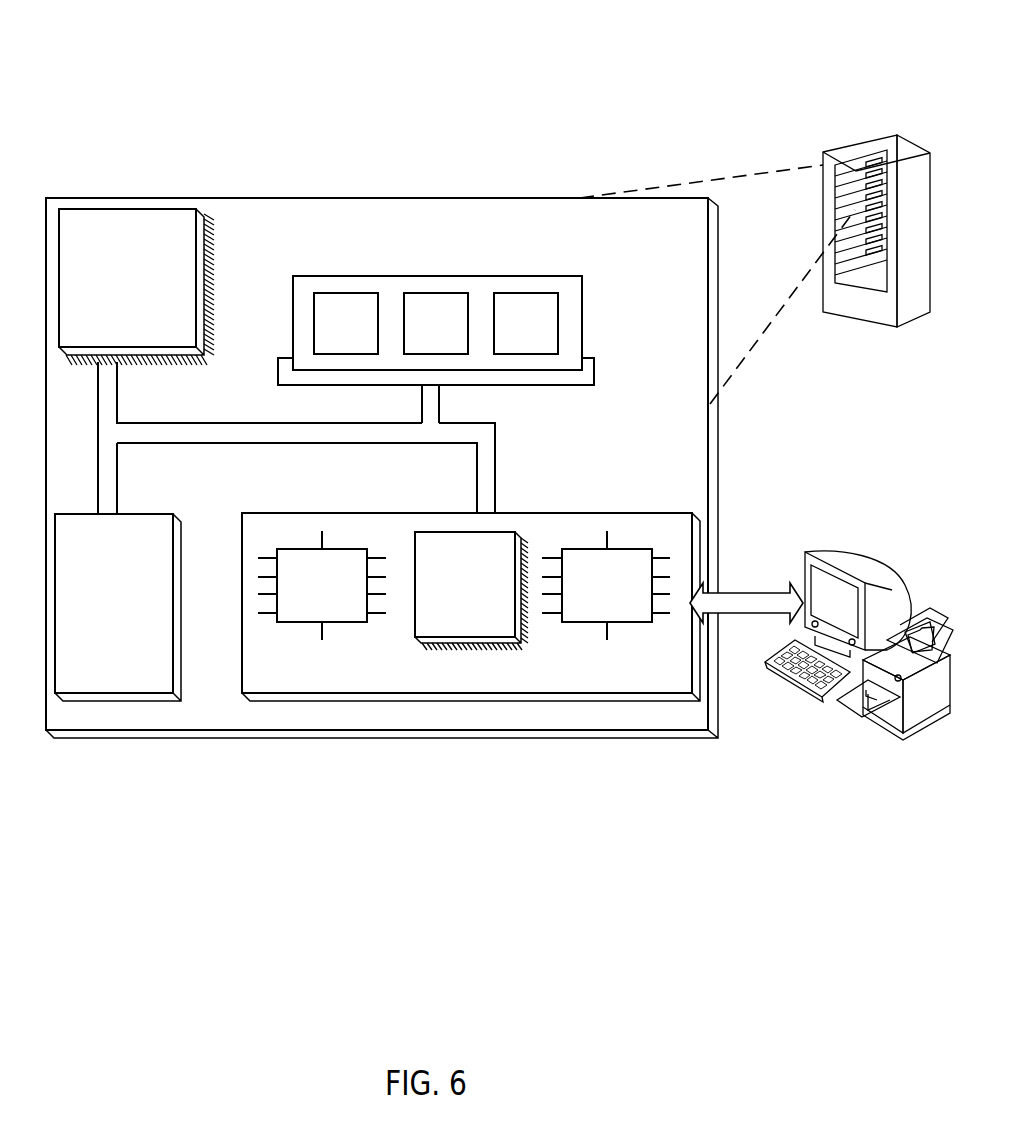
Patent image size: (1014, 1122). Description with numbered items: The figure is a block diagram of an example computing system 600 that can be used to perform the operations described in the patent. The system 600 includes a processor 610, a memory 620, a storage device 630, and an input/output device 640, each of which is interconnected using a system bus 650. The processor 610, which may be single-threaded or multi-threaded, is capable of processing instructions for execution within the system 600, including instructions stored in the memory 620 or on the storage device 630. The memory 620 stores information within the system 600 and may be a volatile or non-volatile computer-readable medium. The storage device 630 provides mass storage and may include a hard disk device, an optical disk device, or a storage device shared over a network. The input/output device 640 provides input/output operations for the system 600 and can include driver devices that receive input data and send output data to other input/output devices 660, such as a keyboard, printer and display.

The computing system 600 is at (90, 50).
The processor 610 is at (188, 339).
The memory 620 is at (582, 325).
The storage device 630 is at (158, 684).
The input/output device 640 is at (652, 513).
The system bus 650 is at (296, 443).
The input/output devices 660 is at (803, 553).